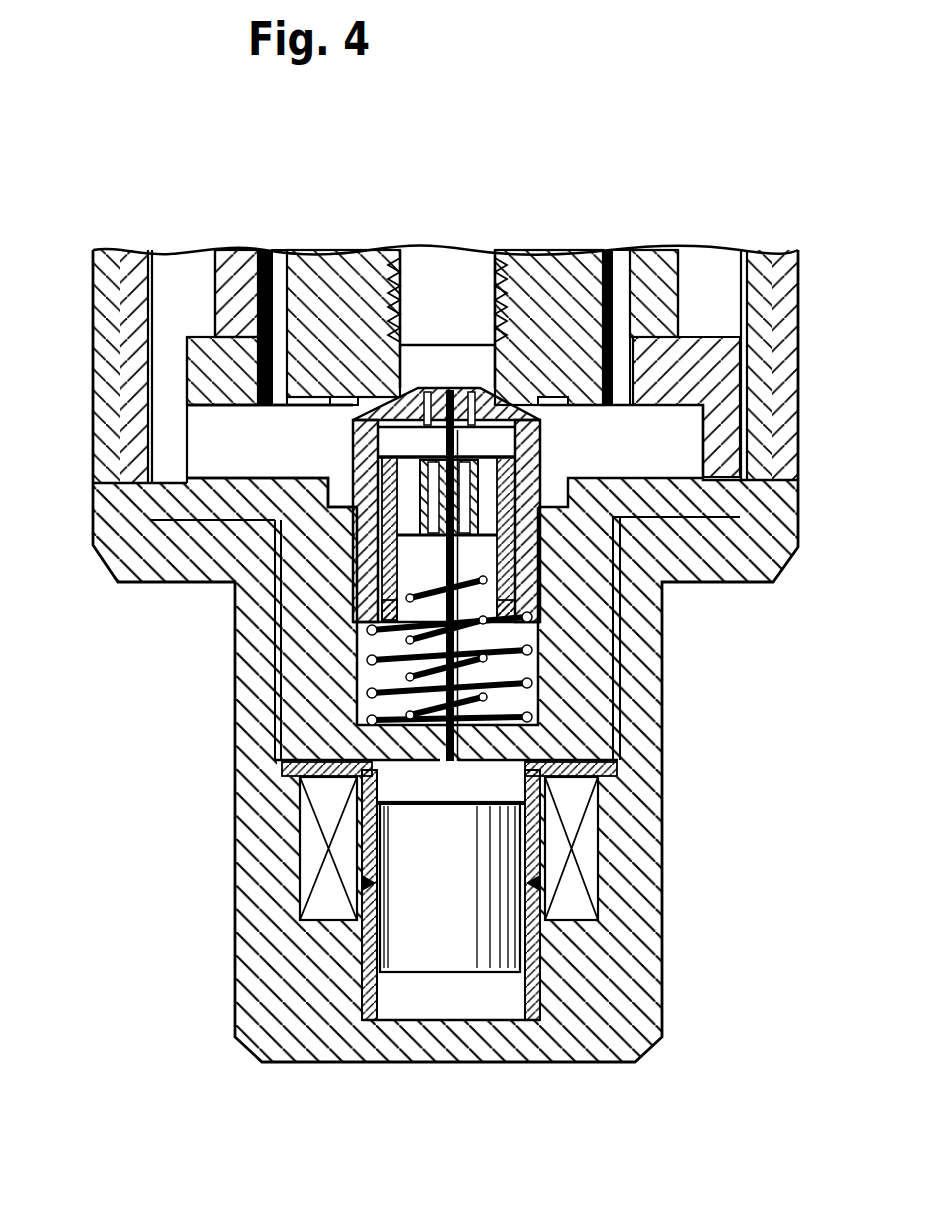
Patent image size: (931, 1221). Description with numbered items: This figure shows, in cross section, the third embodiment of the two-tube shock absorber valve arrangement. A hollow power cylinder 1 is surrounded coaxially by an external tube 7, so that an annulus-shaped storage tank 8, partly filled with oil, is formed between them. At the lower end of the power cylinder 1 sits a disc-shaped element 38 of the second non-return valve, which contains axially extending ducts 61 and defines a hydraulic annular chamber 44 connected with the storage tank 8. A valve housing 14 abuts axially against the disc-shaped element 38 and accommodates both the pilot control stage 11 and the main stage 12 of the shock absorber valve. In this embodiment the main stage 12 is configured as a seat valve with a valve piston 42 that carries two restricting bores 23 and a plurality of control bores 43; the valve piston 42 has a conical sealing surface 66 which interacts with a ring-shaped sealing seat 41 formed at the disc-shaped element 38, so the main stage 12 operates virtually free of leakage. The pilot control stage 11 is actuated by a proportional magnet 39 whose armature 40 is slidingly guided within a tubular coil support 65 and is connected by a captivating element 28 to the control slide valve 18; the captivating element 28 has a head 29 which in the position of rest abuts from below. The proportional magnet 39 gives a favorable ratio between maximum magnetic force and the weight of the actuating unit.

The power cylinder 1 is at (665, 287).
The external tube 7 is at (755, 274).
The storage tank 8 is at (165, 283).
The pilot control stage 11 is at (485, 492).
The main stage 12 is at (518, 396).
The valve housing 14 is at (200, 505).
The control slide valve 18 is at (512, 578).
The restricting bores 23 is at (478, 405).
The captivating element 28 is at (540, 668).
The head 29 is at (357, 442).
The disc-shaped element 38 is at (695, 378).
The proportional magnet 39 is at (600, 860).
The armature 40 is at (447, 953).
The ring-shaped sealing seat 41 is at (368, 386).
The valve piston 42 is at (535, 597).
The control bores 43 is at (357, 474).
The hydraulic annular chamber 44 is at (680, 462).
The ducts 61 is at (275, 270).
The tubular coil support 65 is at (540, 958).
The conical sealing surface 66 is at (390, 392).